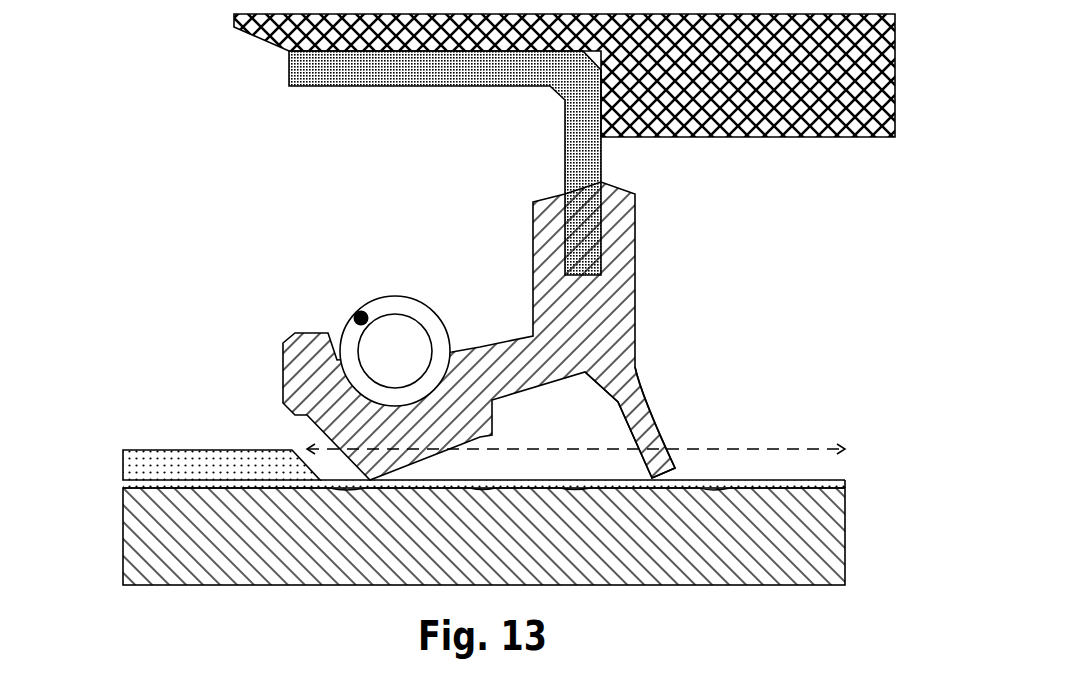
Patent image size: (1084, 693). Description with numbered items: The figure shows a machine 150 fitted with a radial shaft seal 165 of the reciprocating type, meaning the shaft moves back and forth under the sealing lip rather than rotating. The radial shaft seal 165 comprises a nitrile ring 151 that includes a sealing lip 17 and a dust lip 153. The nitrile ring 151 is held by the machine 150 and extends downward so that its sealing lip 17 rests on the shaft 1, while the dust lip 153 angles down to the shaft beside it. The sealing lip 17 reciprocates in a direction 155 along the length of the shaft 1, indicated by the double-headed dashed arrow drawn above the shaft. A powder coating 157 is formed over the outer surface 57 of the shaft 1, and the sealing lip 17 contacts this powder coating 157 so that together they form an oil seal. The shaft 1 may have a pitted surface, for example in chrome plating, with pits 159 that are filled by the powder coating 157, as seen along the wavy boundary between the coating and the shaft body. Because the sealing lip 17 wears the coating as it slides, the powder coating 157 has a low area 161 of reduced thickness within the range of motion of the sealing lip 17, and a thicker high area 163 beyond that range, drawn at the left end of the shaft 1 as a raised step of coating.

The shaft 1 is at (825, 543).
The sealing lip 17 is at (380, 462).
The outer surface 57 is at (593, 492).
The machine 150 is at (192, 82).
The nitrile ring 151 is at (608, 315).
The dust lip 153 is at (650, 432).
The direction 155 is at (808, 448).
The powder coating 157 is at (827, 481).
The pits 159 is at (644, 491).
The low area 161 is at (488, 490).
The high area 163 is at (250, 465).
The radial shaft seal 165 is at (252, 387).